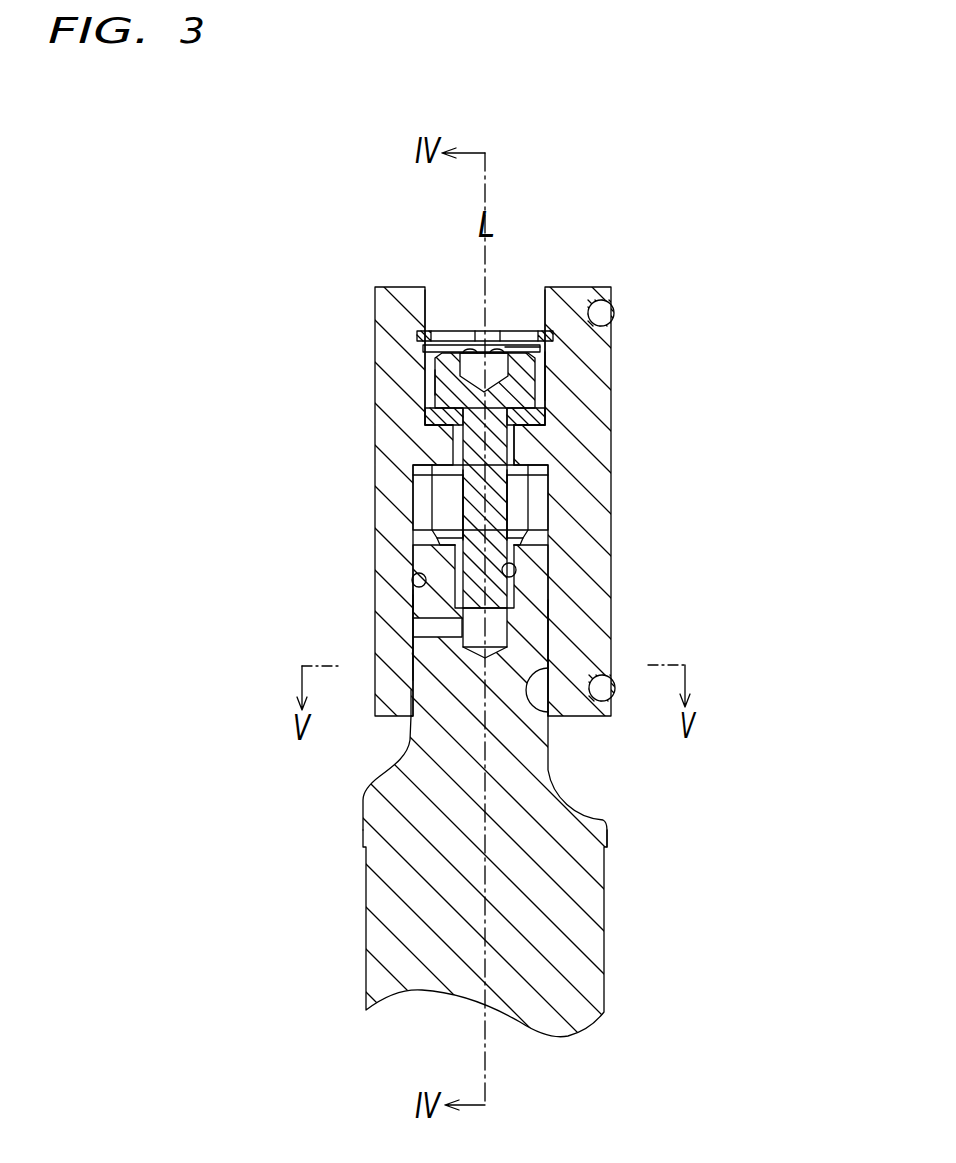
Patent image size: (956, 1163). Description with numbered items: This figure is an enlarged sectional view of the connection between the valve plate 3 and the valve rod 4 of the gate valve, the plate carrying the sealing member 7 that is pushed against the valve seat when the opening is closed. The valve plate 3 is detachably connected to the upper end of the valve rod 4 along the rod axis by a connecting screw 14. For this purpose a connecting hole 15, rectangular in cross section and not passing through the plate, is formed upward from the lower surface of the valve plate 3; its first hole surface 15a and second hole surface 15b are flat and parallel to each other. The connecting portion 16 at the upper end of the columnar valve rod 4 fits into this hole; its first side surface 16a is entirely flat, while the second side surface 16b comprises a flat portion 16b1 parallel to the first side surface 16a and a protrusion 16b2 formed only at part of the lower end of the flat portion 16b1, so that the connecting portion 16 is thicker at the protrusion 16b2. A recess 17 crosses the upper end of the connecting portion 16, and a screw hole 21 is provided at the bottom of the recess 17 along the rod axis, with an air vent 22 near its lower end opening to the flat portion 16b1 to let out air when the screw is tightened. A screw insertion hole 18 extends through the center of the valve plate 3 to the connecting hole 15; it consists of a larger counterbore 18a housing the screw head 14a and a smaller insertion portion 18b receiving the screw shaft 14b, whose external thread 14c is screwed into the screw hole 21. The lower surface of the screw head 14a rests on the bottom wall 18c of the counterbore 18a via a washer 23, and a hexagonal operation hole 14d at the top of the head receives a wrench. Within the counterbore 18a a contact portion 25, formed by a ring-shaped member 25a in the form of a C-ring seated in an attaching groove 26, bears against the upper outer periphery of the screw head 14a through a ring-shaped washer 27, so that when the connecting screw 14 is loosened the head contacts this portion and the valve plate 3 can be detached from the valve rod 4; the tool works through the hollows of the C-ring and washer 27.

The valve plate 3 is at (573, 310).
The valve rod 4 is at (583, 930).
The sealing member 7 is at (612, 308).
The connecting screw 14 is at (450, 447).
The screw head 14a is at (445, 393).
The screw shaft 14b is at (466, 495).
The external thread 14c is at (470, 552).
The hexagonal operation hole 14d is at (497, 352).
The connecting hole 15 is at (536, 506).
The first hole surface 15a is at (546, 718).
The second hole surface 15b is at (472, 566).
The connecting portion 16 is at (530, 598).
The first side surface 16a is at (548, 632).
The second side surface 16b is at (240, 578).
The flat portion 16b1 is at (413, 602).
The protrusion 16b2 is at (415, 707).
The recess 17 is at (518, 512).
The screw insertion hole 18 is at (690, 353).
The counterbore 18a is at (545, 378).
The insertion portion 18b is at (512, 452).
The bottom wall 18c is at (525, 430).
The screw hole 21 is at (514, 578).
The air vent 22 is at (448, 630).
The washer 23 is at (437, 418).
The contact portion 25 is at (421, 286).
The ring-shaped member 25a is at (456, 345).
The attaching groove 26 is at (412, 336).
The washer 27 is at (548, 346).